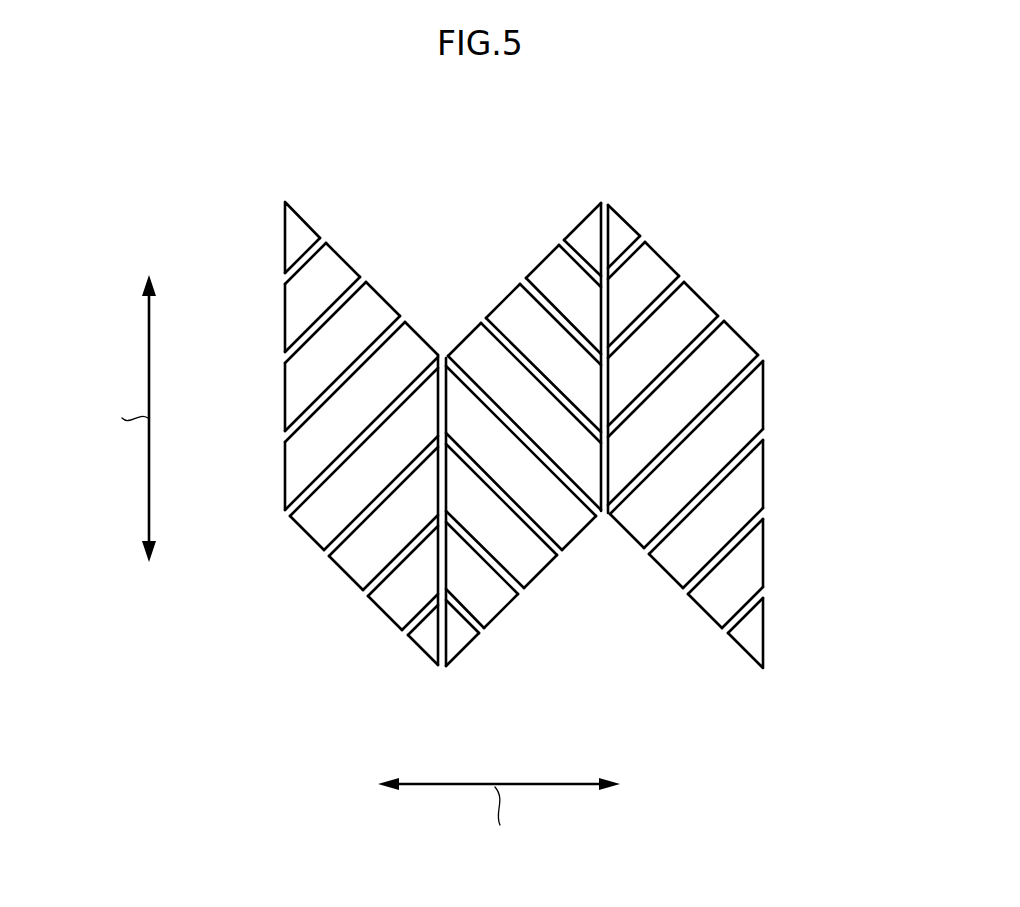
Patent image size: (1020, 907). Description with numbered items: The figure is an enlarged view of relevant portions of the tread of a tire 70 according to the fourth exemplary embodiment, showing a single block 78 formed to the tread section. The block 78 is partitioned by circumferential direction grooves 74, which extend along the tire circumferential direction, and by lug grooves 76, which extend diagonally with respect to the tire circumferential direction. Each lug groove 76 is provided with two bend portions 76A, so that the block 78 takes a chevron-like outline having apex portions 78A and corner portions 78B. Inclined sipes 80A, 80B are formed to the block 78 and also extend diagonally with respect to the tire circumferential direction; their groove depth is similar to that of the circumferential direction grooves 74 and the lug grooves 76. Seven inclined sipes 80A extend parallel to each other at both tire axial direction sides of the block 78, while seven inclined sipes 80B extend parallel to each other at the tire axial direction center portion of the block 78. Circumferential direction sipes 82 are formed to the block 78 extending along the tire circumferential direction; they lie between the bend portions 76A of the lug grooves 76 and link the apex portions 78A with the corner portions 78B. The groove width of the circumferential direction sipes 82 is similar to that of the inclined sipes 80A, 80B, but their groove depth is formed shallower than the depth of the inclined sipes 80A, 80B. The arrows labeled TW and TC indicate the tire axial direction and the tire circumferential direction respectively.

The tire 70 is at (681, 140).
The circumferential direction grooves 74 is at (272, 414).
The lug grooves 76 is at (523, 267).
The bend portions 76A is at (603, 170).
The block 78 is at (705, 292).
The apex portions 78A is at (620, 214).
The corner portions 78B is at (437, 352).
The inclined sipes 80A is at (330, 305).
The inclined sipes 80B is at (578, 352).
The circumferential direction sipes 82 is at (607, 312).